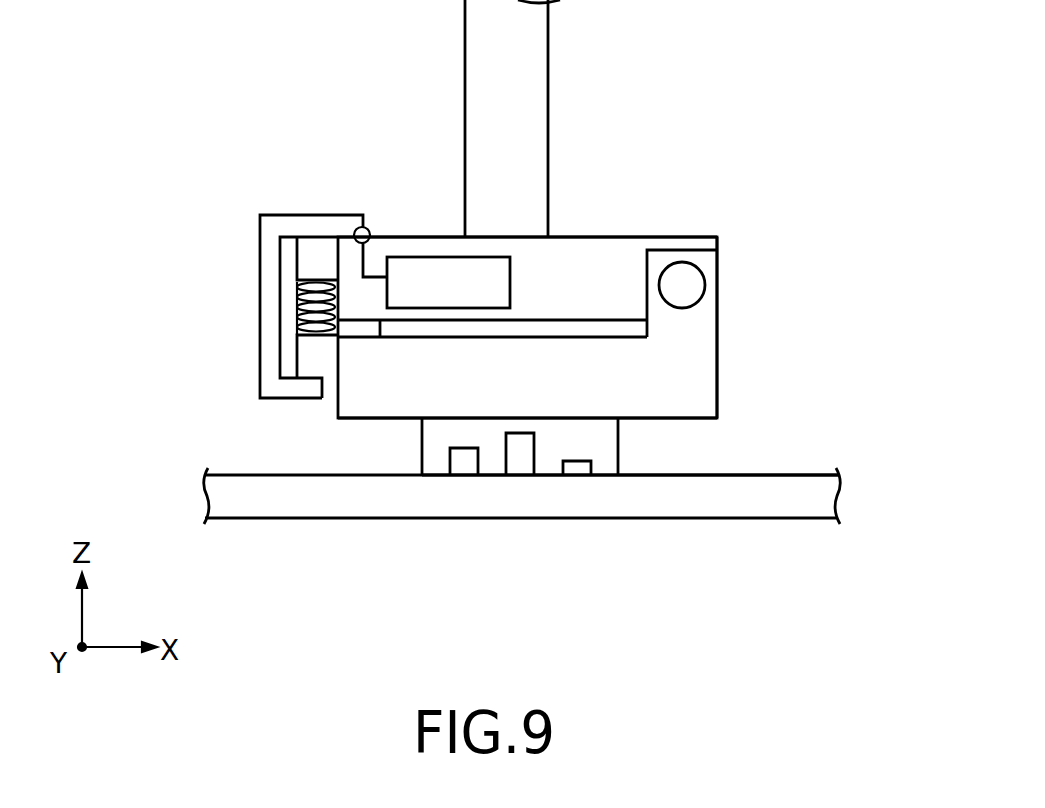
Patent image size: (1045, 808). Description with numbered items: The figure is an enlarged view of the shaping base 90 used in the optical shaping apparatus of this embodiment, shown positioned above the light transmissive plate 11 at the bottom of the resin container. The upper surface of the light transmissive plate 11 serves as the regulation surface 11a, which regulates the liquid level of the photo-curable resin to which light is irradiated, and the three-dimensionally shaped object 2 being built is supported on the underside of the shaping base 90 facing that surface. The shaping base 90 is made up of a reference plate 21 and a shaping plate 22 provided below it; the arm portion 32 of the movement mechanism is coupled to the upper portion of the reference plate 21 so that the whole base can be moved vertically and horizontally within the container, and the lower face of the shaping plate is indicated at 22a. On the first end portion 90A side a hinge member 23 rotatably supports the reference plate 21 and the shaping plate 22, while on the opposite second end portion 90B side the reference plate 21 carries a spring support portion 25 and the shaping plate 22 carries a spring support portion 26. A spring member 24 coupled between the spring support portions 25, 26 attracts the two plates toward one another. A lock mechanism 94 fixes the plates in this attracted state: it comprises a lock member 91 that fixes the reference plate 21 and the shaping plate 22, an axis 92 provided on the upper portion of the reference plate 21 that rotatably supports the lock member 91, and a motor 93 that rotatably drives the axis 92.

The three-dimensionally shaped object 2 is at (547, 467).
The light transmissive plate 11 is at (484, 506).
The regulation surface 11a is at (675, 475).
The reference plate 21 is at (592, 246).
The shaping plate 22 is at (705, 370).
The bottom surface of holder 22a is at (372, 418).
The hinge member 23 is at (682, 285).
The spring member 24 is at (297, 302).
The spring support portion 25 is at (315, 258).
The spring support portion 26 is at (315, 356).
The arm portion 32 is at (466, 63).
The shaping base 90 is at (673, 118).
The first end portion 90A is at (718, 237).
The second end portion 90B is at (298, 236).
The lock member 91 is at (322, 225).
The axis 92 is at (362, 227).
The motor 93 is at (420, 257).
The lock mechanism 94 is at (437, 167).